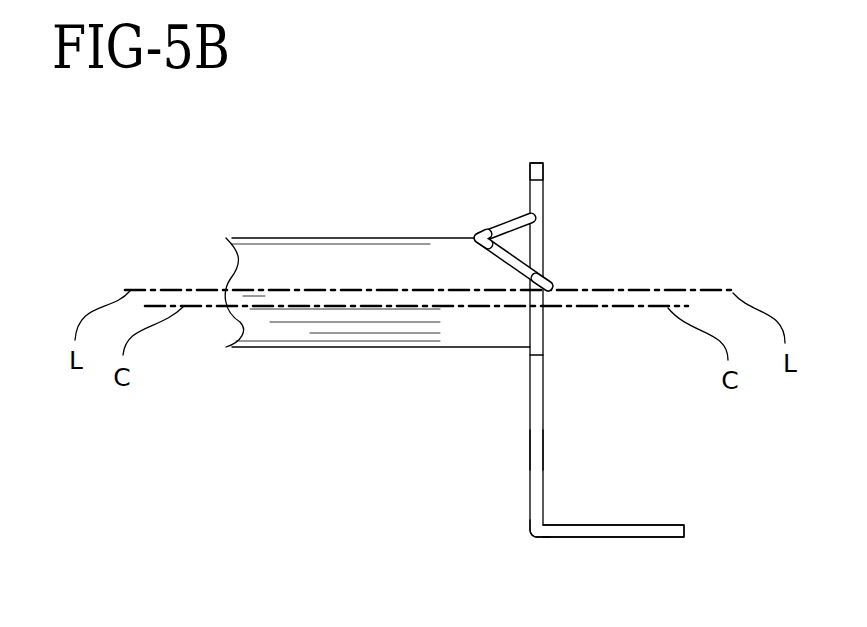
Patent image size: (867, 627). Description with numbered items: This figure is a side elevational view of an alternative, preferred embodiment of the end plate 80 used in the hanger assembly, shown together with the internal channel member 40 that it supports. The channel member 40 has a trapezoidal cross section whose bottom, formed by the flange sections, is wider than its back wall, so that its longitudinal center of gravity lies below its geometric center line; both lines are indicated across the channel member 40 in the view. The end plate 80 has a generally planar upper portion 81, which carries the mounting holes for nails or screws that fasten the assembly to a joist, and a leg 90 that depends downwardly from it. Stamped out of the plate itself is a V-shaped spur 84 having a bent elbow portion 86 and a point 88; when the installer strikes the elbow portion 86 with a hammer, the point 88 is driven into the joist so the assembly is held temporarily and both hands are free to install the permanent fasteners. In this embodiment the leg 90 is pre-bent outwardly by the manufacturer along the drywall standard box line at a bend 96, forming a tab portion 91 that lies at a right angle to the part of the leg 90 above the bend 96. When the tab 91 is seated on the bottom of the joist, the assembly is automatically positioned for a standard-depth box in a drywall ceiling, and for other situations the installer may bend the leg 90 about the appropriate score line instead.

The internal channel member 40 is at (282, 255).
The end plate 80 is at (545, 415).
The upper portion 81 is at (544, 190).
The spur 84 is at (507, 217).
The elbow portion 86 is at (475, 240).
The point 88 is at (550, 289).
The leg 90 is at (530, 452).
The tab portion 91 is at (640, 525).
The bend 96 is at (530, 536).